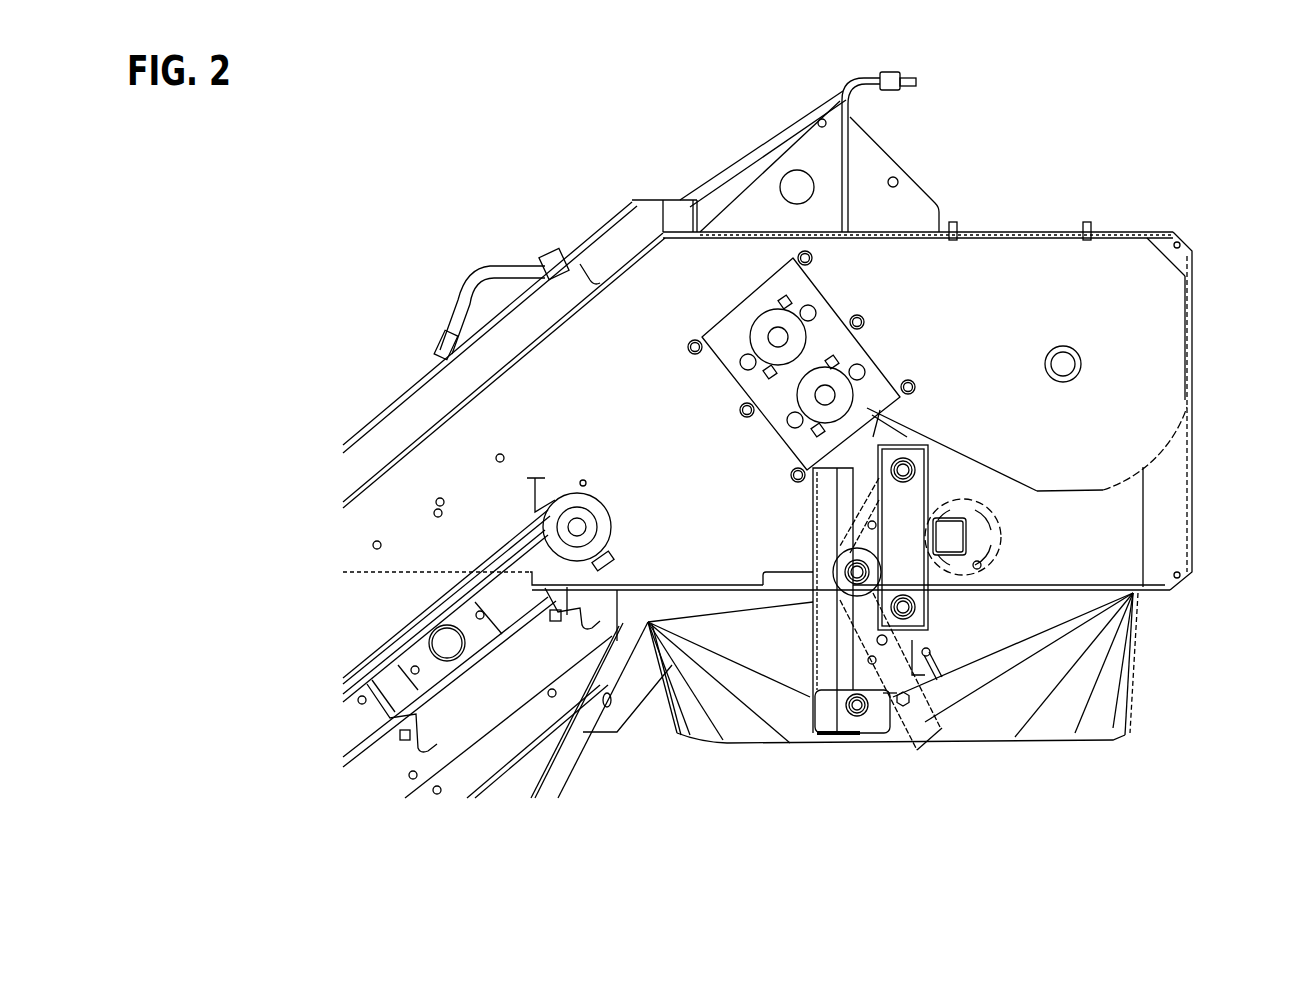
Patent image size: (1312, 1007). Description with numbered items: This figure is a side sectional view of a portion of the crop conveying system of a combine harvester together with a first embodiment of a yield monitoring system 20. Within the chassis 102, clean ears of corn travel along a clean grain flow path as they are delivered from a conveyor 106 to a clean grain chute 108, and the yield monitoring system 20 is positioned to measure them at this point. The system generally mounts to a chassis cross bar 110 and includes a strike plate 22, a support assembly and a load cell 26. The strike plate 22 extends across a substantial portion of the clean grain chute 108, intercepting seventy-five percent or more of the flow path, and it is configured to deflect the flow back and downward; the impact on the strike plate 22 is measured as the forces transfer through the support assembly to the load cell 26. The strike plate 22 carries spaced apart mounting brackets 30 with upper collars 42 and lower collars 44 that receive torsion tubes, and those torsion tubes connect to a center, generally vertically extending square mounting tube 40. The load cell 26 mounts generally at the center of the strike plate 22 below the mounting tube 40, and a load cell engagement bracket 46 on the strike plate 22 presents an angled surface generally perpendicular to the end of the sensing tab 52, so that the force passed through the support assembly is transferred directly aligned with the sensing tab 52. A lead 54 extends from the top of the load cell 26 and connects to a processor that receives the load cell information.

The yield monitoring system 20 is at (841, 783).
The strike plate 22 is at (823, 632).
The load cell 26 is at (923, 700).
The mounting bracket 30 is at (823, 542).
The square mounting tube 40 is at (913, 498).
The upper collar 42 is at (850, 549).
The lower collar 44 is at (865, 713).
The load cell engagement bracket 46 is at (878, 712).
The sensing tab 52 is at (900, 693).
The lead 54 is at (937, 658).
The chassis 102 is at (1190, 362).
The conveyor 106 is at (588, 497).
The clean grain chute 108 is at (756, 618).
The chassis cross bar 110 is at (952, 535).